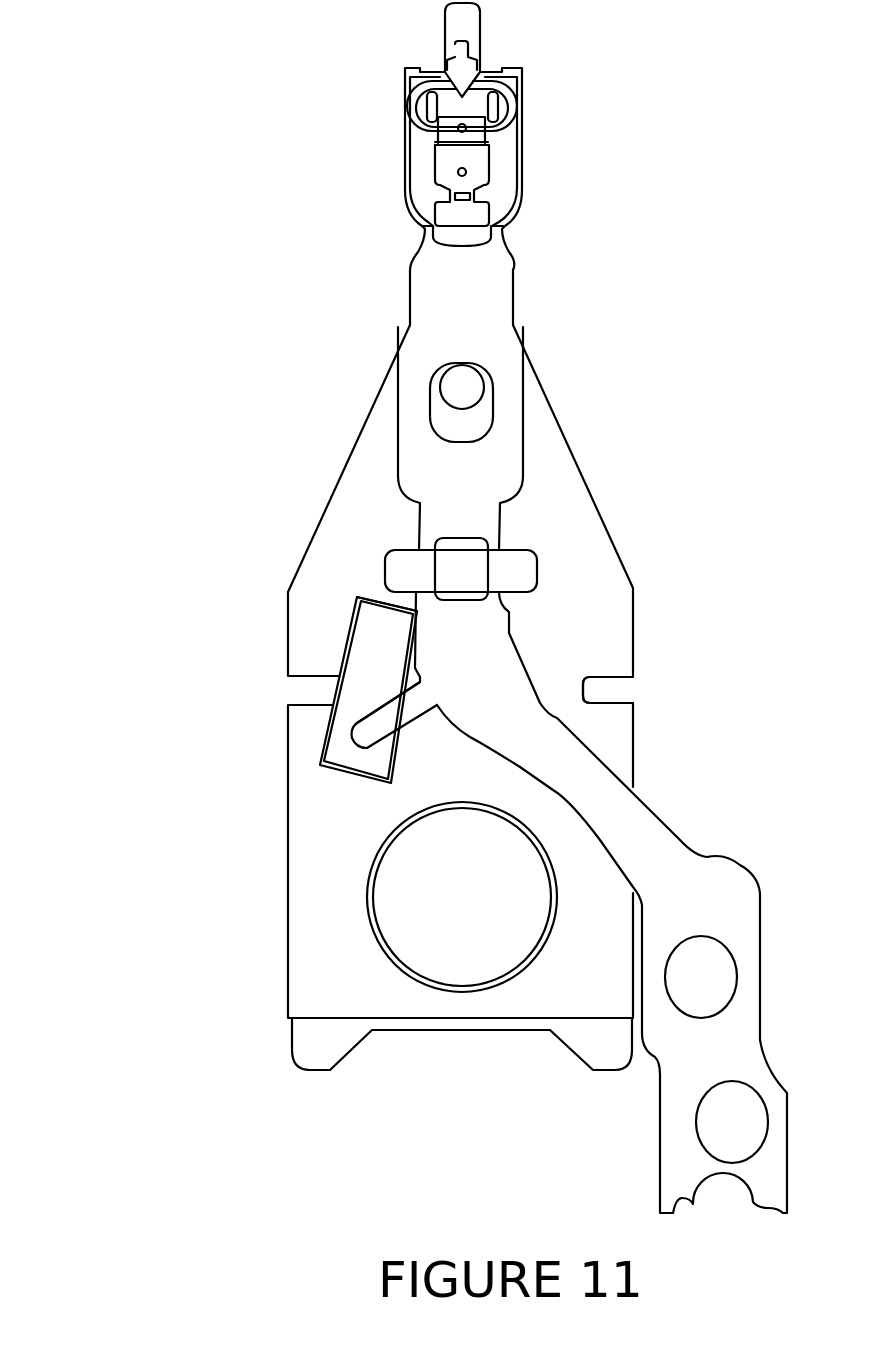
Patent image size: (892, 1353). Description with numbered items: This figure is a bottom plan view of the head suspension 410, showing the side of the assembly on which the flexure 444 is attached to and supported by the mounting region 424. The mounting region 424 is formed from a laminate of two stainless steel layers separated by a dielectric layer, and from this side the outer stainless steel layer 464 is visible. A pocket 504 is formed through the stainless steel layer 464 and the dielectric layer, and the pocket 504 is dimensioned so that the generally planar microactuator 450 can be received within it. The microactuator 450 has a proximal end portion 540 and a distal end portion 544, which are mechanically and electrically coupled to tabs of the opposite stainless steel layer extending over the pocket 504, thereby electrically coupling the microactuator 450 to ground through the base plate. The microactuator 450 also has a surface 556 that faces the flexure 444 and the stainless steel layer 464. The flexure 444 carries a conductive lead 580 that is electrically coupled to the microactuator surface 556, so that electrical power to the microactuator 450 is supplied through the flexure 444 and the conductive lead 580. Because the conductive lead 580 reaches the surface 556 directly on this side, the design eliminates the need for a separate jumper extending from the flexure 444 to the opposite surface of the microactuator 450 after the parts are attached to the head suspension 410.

The head suspension 410 is at (430, 608).
The mounting region 424 is at (308, 948).
The flexure 444 is at (517, 273).
The microactuator 450 is at (380, 603).
The stainless steel layer 464 is at (632, 606).
The pocket 504 is at (282, 550).
The proximal end portion 540 is at (343, 737).
The distal end portion 544 is at (372, 612).
The surface 556 is at (358, 648).
The conductive lead 580 is at (387, 727).